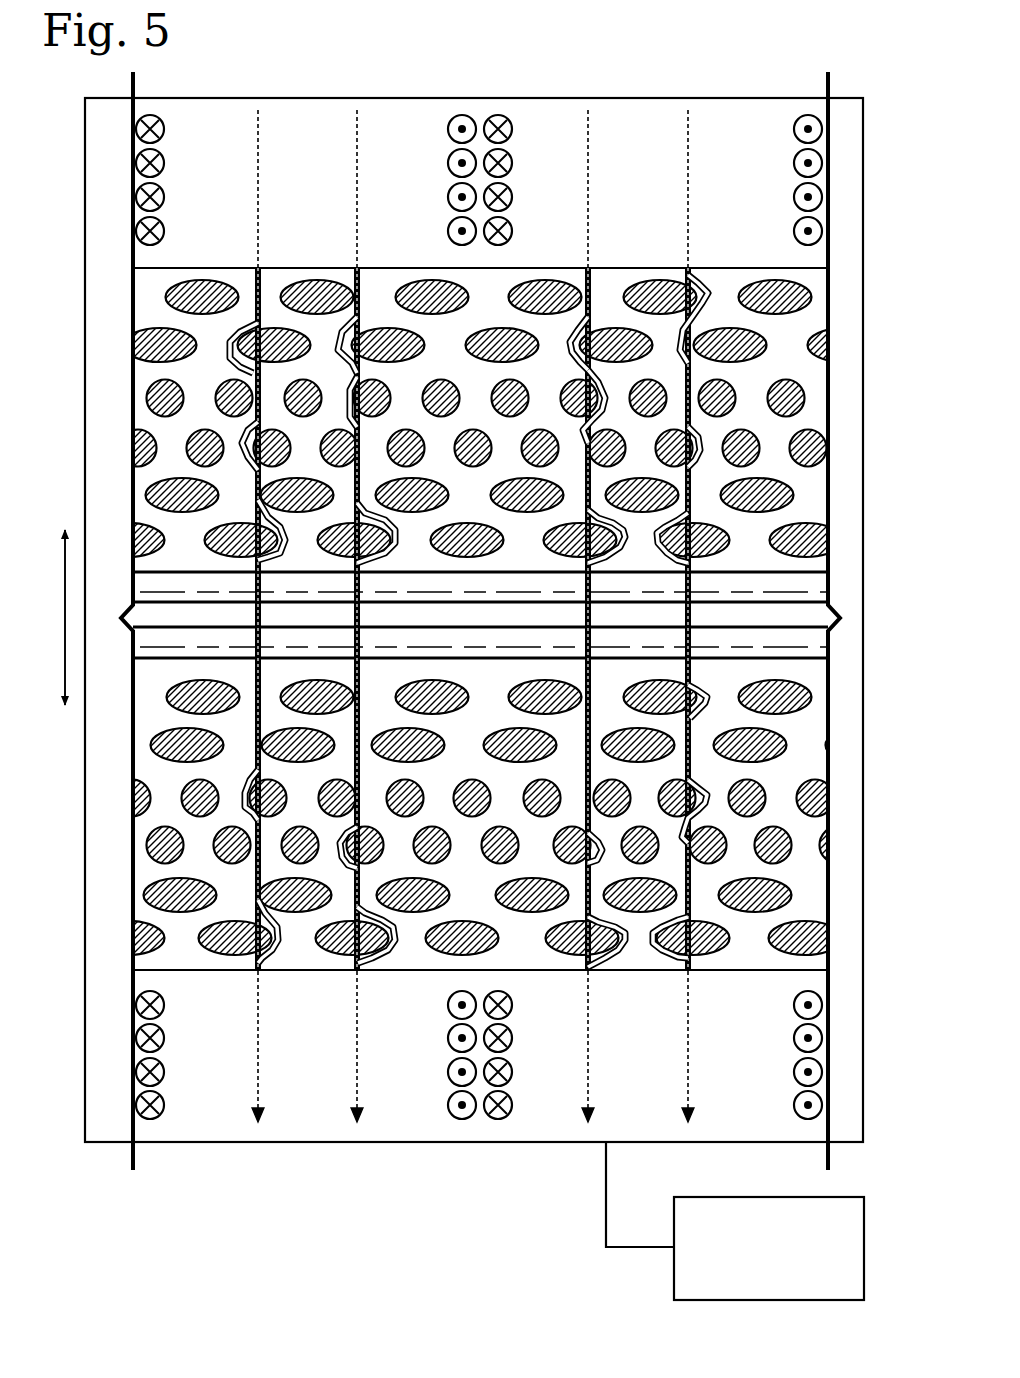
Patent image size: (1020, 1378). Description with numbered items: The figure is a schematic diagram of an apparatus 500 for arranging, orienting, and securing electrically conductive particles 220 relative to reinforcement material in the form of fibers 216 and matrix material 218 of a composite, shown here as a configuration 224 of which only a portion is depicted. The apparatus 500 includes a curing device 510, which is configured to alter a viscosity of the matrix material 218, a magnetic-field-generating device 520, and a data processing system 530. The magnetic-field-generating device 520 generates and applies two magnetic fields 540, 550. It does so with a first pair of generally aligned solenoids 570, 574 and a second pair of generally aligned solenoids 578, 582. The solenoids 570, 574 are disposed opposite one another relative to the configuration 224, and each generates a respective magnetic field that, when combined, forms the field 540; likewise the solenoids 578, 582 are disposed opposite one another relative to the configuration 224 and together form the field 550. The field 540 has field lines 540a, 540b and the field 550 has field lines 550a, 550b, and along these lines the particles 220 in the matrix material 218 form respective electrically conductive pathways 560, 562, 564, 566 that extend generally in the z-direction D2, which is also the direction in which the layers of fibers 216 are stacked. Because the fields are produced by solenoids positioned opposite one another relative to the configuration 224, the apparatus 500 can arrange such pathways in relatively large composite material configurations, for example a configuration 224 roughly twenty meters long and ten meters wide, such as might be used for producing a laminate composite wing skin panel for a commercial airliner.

The apparatus 500 is at (236, 66).
The curing device 510 is at (846, 99).
The magnetic-field-generating device 520 is at (404, 118).
The data processing system 530 is at (745, 1196).
The magnetic field 540 is at (299, 616).
The field line 540a is at (262, 242).
The field line 540b is at (362, 242).
The magnetic field 550 is at (679, 616).
The field line 550a is at (592, 242).
The field line 550b is at (692, 242).
The electrically conductive pathway 560 is at (285, 957).
The electrically conductive pathway 562 is at (398, 958).
The electrically conductive pathway 564 is at (620, 960).
The electrically conductive pathway 566 is at (652, 960).
The solenoid 570 is at (150, 103).
The solenoid 574 is at (152, 1130).
The solenoid 578 is at (499, 103).
The solenoid 582 is at (500, 1130).
The fibers 216 is at (328, 290).
The matrix material 218 is at (495, 283).
The electrically conductive particles 220 is at (252, 380).
The configuration 224 is at (176, 268).
The z-direction D2 is at (68, 622).